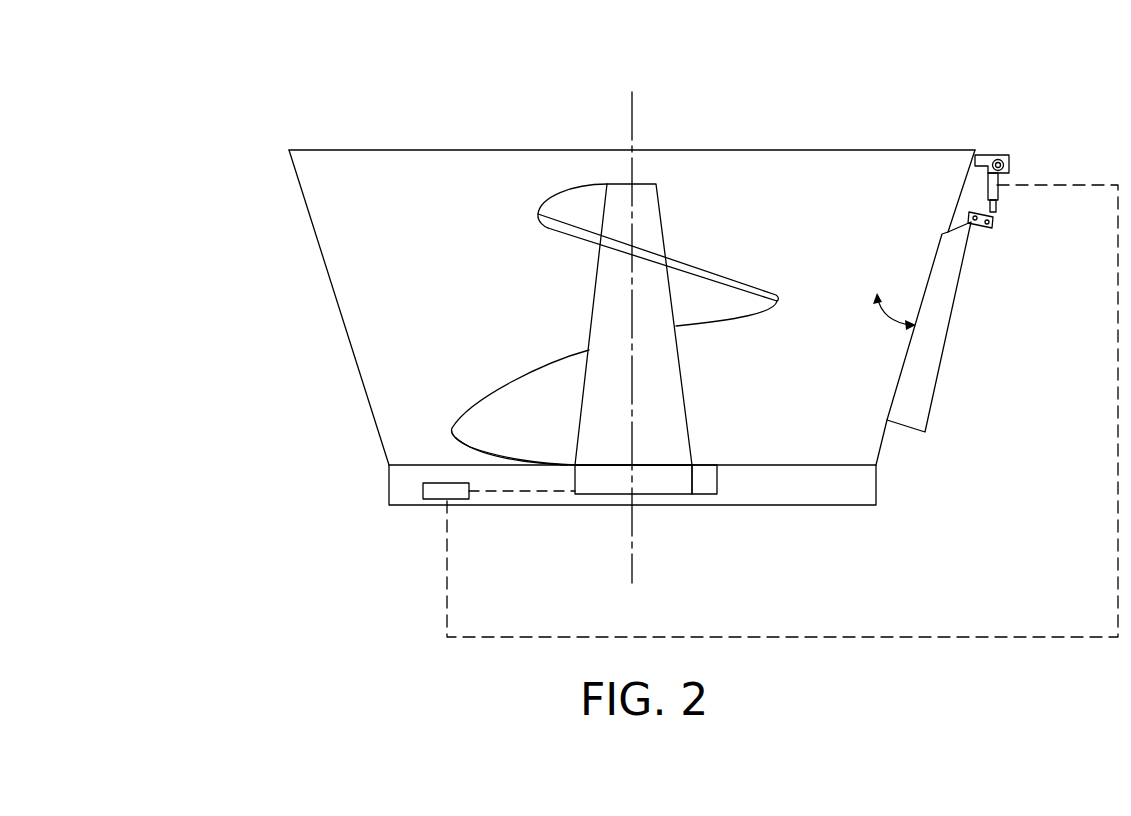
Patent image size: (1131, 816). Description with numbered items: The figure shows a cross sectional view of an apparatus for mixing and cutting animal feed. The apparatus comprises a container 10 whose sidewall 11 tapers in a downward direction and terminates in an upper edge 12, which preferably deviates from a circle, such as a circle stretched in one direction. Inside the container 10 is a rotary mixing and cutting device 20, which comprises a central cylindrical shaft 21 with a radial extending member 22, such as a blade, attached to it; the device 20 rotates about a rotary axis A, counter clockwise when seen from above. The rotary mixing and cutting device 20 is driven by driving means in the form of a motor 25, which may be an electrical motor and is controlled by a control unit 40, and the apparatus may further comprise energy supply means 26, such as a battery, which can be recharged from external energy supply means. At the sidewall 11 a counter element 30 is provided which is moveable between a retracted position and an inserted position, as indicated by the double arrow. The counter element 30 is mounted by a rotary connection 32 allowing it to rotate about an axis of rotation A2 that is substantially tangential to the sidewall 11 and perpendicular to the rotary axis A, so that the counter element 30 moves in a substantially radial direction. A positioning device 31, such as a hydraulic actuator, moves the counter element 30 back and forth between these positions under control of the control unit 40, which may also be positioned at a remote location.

The container 10 is at (567, 270).
The sidewall 11 is at (348, 335).
The upper edge 12 is at (433, 151).
The rotary mixing and cutting device 20 is at (649, 257).
The central cylindrical shaft 21 is at (650, 243).
The radial extending member 22 is at (668, 218).
The motor 25 is at (654, 480).
The energy supply means 26 is at (705, 480).
The counter element 30 is at (927, 365).
The positioning device 31 is at (997, 185).
The rotary connection 32 is at (976, 219).
The control unit 40 is at (447, 490).
The rotary axis A is at (632, 113).
The axis of rotation A2 is at (976, 220).